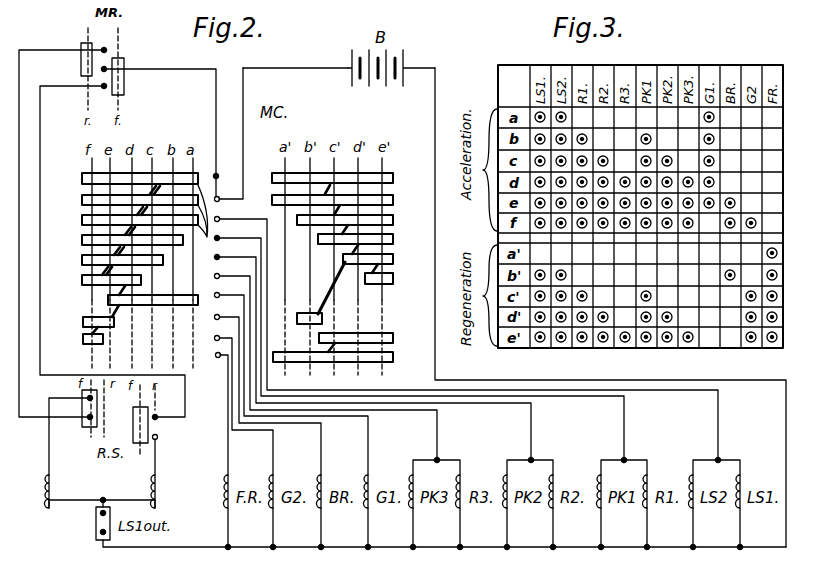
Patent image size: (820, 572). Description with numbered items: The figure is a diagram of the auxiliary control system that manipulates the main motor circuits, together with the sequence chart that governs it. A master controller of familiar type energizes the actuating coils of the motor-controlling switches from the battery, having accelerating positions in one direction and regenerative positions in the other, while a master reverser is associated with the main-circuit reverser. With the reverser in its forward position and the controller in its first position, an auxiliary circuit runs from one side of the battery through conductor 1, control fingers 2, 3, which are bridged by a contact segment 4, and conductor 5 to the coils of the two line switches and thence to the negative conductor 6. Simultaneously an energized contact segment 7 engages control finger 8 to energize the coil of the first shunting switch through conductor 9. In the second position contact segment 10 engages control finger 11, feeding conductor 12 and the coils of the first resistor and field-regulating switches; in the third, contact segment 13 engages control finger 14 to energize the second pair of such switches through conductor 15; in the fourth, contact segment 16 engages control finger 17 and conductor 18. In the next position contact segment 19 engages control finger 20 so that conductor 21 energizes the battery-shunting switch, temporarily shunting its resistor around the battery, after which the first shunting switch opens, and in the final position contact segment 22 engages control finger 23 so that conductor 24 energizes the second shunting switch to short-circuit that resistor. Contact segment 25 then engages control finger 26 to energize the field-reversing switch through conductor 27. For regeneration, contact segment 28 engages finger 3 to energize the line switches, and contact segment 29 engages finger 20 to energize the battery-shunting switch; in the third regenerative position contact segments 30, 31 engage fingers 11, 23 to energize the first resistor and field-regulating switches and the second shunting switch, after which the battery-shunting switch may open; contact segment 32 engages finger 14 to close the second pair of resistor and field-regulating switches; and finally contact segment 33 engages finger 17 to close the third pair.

The conductor 1 is at (302, 67).
The control finger 2 is at (219, 196).
The control finger 3 is at (219, 216).
The contact segment 4 is at (202, 216).
The conductor 5 is at (257, 219).
The negative conductor 6 is at (428, 113).
The contact segment 7 is at (167, 306).
The control finger 8 is at (224, 288).
The conductor 9 is at (368, 442).
The contact segment 10 is at (181, 245).
The control finger 11 is at (219, 236).
The conductor 12 is at (624, 415).
The contact segment 13 is at (163, 266).
The control finger 14 is at (219, 255).
The conductor 15 is at (540, 425).
The contact segment 16 is at (86, 286).
The control finger 17 is at (224, 269).
The conductor 18 is at (452, 434).
The contact segment 19 is at (114, 326).
The control finger 20 is at (213, 312).
The conductor 21 is at (321, 446).
The contact segment 22 is at (88, 344).
The control finger 23 is at (209, 333).
The conductor 24 is at (273, 459).
The contact segment 25 is at (304, 362).
The control finger 26 is at (217, 358).
The conductor 27 is at (228, 450).
The contact segment 28 is at (304, 226).
The contact segment 29 is at (304, 325).
The contact segment 30 is at (330, 245).
The contact segment 31 is at (341, 333).
The contact segment 32 is at (349, 271).
The contact segment 33 is at (392, 285).